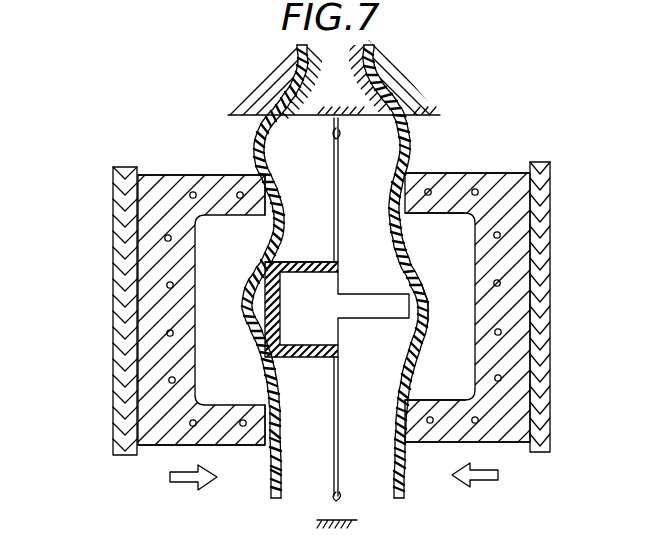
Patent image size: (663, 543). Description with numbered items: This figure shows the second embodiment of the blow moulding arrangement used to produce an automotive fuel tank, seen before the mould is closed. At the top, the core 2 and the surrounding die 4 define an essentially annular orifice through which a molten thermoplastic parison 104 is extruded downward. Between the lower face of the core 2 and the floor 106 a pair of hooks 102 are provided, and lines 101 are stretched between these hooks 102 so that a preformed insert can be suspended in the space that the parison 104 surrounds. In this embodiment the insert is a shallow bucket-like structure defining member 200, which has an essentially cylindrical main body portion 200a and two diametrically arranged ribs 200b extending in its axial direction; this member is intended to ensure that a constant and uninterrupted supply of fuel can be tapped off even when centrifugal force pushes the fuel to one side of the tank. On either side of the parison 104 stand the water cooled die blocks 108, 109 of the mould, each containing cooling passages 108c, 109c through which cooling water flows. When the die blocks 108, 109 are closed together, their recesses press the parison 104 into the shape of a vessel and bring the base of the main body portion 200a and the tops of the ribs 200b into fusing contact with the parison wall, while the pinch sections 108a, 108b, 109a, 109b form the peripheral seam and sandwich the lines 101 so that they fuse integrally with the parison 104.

The core 2 is at (342, 58).
The die 4 is at (447, 96).
The lines 101 is at (340, 178).
The hooks 102 is at (333, 137).
The parison 104 is at (429, 322).
The floor 106 is at (355, 520).
The die block 108 is at (145, 334).
The pinch section 108a is at (262, 188).
The pinch section 108b is at (243, 446).
The cooling passages 108c is at (166, 285).
The die block 109 is at (509, 332).
The pinch section 109a is at (404, 174).
The pinch section 109b is at (425, 448).
The cooling passages 109c is at (501, 283).
The structure defining member 200 is at (298, 324).
The main body portion 200a is at (293, 261).
The ribs 200b is at (373, 294).